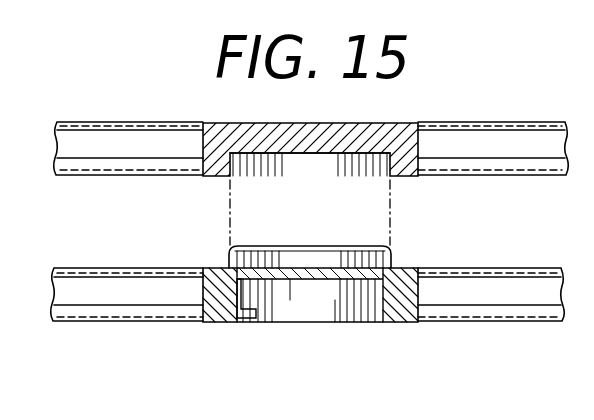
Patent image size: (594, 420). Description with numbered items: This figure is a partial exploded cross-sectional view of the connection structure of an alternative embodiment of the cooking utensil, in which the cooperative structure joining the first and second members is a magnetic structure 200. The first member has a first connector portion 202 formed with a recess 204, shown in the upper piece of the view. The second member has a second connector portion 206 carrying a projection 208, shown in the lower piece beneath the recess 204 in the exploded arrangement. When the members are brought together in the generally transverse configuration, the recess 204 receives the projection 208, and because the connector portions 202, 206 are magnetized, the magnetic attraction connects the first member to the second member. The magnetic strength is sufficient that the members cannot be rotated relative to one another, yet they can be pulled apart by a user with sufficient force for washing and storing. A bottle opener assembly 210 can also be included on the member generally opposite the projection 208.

The magnetic structure 200 is at (408, 258).
The first connector portion 202 is at (237, 131).
The recess 204 is at (306, 157).
The second connector portion 206 is at (215, 306).
The projection 208 is at (310, 246).
The bottle opener assembly 210 is at (255, 306).